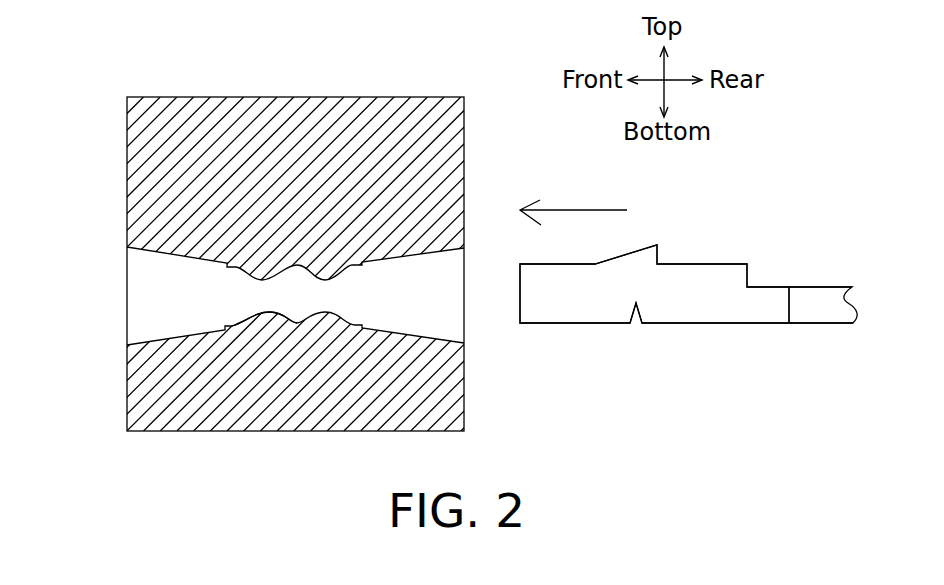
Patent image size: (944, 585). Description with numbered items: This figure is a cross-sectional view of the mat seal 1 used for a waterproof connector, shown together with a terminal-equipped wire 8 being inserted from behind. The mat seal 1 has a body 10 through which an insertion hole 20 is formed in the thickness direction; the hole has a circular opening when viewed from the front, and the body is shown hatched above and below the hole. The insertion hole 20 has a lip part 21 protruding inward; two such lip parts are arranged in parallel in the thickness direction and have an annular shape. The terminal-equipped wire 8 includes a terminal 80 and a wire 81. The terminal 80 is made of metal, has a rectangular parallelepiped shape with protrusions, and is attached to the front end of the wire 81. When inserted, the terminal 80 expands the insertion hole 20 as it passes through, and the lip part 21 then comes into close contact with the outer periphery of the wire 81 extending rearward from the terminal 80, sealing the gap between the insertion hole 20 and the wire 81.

The mat seal 1 is at (450, 66).
The body 10 is at (212, 97).
The insertion hole 20 is at (430, 338).
The lip part 21 is at (268, 321).
The terminal-equipped wire 8 is at (756, 240).
The terminal 80 is at (677, 310).
The wire 81 is at (805, 297).